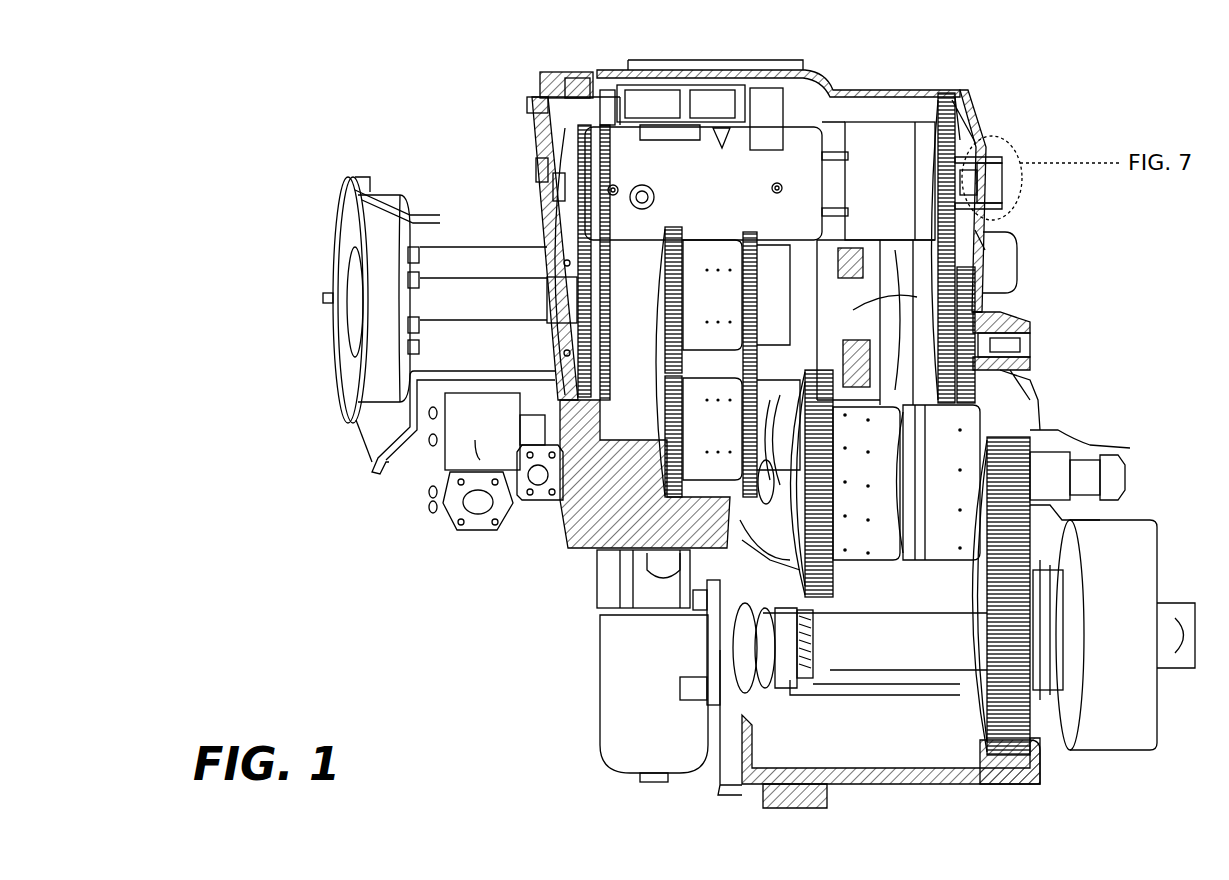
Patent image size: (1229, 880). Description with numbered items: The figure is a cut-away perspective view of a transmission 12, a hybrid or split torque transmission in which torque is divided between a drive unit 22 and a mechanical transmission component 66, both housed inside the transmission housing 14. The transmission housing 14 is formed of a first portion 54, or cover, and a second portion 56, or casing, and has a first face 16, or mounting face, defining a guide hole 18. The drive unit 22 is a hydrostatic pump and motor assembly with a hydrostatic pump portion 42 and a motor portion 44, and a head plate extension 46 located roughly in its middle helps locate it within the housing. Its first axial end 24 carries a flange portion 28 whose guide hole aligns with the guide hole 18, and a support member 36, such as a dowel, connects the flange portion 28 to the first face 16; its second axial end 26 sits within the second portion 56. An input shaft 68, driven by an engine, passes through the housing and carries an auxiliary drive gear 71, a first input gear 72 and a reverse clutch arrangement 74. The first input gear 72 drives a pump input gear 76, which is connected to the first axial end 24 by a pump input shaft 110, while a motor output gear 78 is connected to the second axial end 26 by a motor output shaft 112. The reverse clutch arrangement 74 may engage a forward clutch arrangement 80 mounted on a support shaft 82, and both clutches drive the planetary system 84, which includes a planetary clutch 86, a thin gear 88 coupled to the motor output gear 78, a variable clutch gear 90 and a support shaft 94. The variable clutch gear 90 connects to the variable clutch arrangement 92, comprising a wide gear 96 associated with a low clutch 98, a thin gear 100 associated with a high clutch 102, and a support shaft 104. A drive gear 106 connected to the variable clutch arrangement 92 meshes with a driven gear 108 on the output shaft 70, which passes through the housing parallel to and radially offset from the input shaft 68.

The transmission 12 is at (1050, 66).
The transmission housing 14 is at (832, 88).
The first face 16 is at (563, 127).
The guide hole 18 is at (530, 97).
The drive unit 22 is at (700, 95).
The first axial end 24 is at (585, 83).
The second axial end 26 is at (927, 97).
The flange portion 28 is at (625, 80).
The support member 36 is at (527, 103).
The hydrostatic pump portion 42 is at (677, 137).
The motor portion 44 is at (880, 140).
The head plate extension 46 is at (765, 100).
The first portion 54 is at (537, 170).
The second portion 56 is at (987, 150).
The mechanical transmission component 66 is at (1040, 390).
The input shaft 68 is at (452, 288).
The output shaft 70 is at (880, 667).
The auxiliary drive gear 71 is at (577, 373).
The first input gear 72 is at (605, 445).
The reverse clutch arrangement 74 is at (665, 465).
The pump input gear 76 is at (558, 94).
The motor output gear 78 is at (950, 97).
The forward clutch arrangement 80 is at (650, 505).
The support shaft 82 is at (590, 507).
The planetary system 84 is at (995, 243).
The planetary clutch 86 is at (977, 310).
The thin gear 88 is at (995, 270).
The variable clutch gear 90 is at (1000, 325).
The variable clutch arrangement 92 is at (865, 600).
The support shaft 94 is at (1030, 345).
The wide gear 96 is at (777, 545).
The low clutch 98 is at (837, 673).
The thin gear 100 is at (970, 575).
The high clutch 102 is at (868, 564).
The support shaft 104 is at (1100, 470).
The drive gear 106 is at (1017, 447).
The driven gear 108 is at (1037, 737).
The pump input shaft 110 is at (557, 187).
The motor output shaft 112 is at (985, 179).